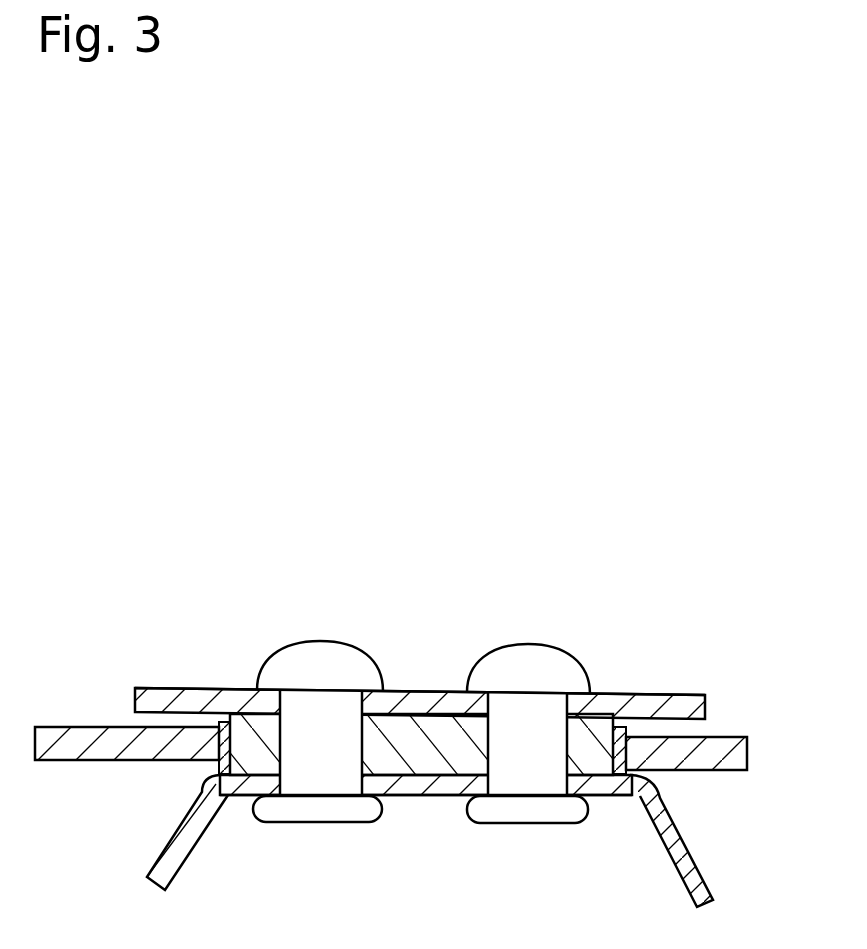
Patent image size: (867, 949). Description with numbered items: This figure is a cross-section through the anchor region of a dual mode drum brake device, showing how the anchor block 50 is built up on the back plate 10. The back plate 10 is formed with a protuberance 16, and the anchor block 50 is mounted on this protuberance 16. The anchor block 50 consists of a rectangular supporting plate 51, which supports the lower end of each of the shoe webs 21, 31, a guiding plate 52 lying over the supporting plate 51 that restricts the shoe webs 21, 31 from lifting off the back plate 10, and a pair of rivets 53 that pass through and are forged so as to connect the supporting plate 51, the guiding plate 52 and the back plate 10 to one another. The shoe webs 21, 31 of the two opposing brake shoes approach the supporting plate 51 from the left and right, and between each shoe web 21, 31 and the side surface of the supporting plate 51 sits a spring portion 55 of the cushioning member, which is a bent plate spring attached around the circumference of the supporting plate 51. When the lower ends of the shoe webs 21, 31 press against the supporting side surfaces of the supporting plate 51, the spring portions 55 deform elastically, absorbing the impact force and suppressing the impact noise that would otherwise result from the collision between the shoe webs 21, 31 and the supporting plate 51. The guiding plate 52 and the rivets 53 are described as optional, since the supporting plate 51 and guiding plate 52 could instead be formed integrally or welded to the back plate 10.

The back plate 10 is at (697, 858).
The protuberance 16 is at (247, 798).
The shoe web 21 is at (710, 771).
The shoe web 31 is at (73, 762).
The anchor block 50 is at (270, 567).
The supporting plate 51 is at (442, 720).
The guiding plate 52 is at (395, 700).
The rivet 53 is at (312, 648).
The spring portion 55 is at (222, 752).